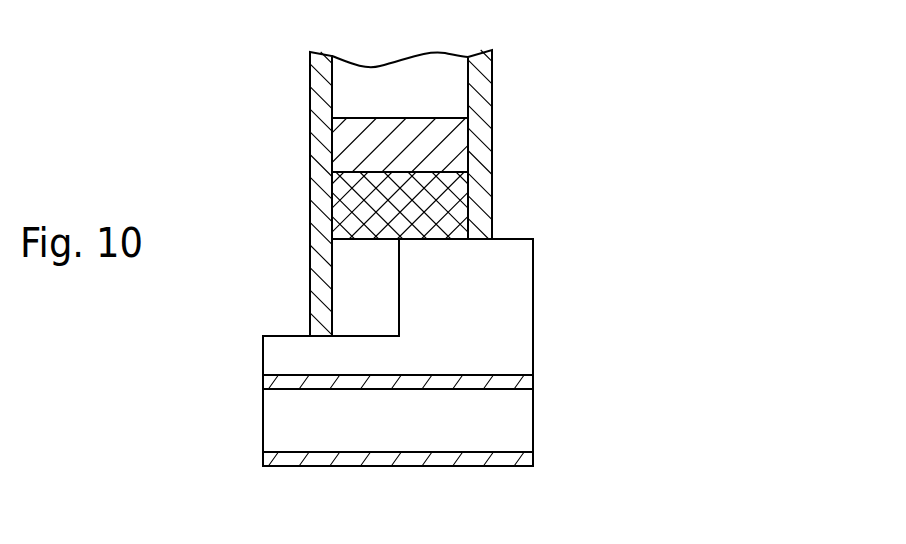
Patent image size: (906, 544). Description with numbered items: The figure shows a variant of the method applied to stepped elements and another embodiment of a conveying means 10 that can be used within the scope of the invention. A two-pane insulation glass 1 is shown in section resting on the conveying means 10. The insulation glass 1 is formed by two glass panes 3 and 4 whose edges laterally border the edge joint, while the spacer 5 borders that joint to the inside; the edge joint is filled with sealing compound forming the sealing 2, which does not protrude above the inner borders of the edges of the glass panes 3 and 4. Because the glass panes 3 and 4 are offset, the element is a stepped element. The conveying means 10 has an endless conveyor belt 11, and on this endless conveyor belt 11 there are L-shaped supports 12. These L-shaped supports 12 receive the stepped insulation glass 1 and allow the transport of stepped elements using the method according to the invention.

The two-pane insulation glass 1 is at (215, 102).
The sealing 2 is at (360, 190).
The glass pane 3 is at (320, 87).
The glass pane 4 is at (480, 87).
The spacer 5 is at (440, 158).
The conveying means 10 is at (560, 418).
The endless conveyor belt 11 is at (510, 287).
The L-shaped supports 12 is at (507, 262).